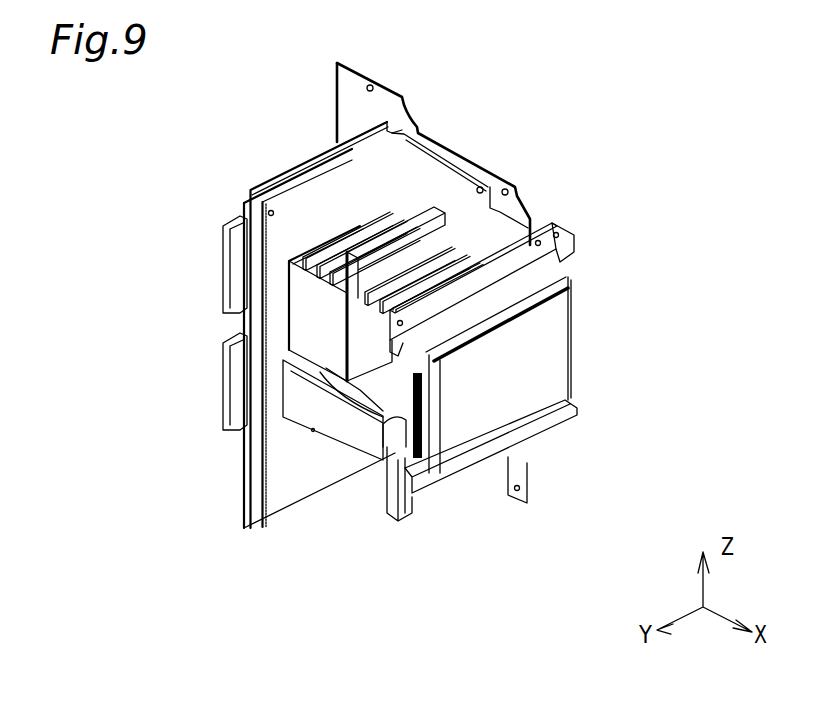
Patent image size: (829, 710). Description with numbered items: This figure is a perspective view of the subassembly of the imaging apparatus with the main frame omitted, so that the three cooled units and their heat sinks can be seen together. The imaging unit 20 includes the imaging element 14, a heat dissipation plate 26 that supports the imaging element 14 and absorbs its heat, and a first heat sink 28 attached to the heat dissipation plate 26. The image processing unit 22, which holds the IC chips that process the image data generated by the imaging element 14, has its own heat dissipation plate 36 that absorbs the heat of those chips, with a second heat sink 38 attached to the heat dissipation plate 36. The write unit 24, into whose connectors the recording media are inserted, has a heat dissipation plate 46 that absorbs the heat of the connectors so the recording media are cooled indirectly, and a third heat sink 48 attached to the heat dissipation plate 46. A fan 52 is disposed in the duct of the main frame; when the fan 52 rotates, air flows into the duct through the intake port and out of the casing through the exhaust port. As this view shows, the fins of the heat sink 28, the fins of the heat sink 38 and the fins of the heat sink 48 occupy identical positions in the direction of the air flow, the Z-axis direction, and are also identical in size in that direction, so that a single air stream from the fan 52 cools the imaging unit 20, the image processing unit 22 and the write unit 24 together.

The imaging element 14 is at (562, 378).
The imaging unit 20 is at (523, 399).
The image processing unit 22 is at (502, 148).
The write unit 24 is at (178, 292).
The heat dissipation plate 26 is at (567, 232).
The heat sink 28 is at (358, 348).
The heat dissipation plate 36 is at (430, 160).
The heat sink 38 is at (443, 224).
The heat dissipation plate 46 is at (273, 503).
The heat sink 48 is at (327, 243).
The fan 52 is at (335, 430).